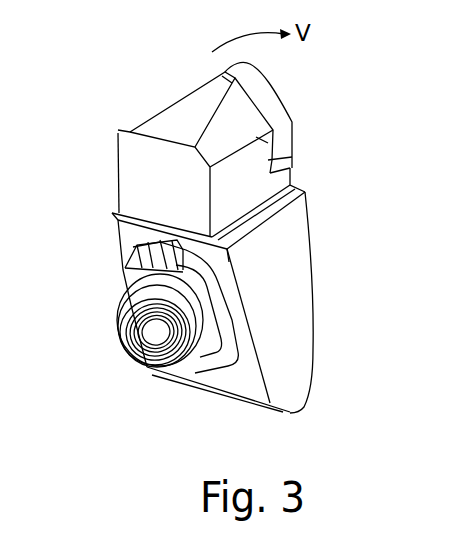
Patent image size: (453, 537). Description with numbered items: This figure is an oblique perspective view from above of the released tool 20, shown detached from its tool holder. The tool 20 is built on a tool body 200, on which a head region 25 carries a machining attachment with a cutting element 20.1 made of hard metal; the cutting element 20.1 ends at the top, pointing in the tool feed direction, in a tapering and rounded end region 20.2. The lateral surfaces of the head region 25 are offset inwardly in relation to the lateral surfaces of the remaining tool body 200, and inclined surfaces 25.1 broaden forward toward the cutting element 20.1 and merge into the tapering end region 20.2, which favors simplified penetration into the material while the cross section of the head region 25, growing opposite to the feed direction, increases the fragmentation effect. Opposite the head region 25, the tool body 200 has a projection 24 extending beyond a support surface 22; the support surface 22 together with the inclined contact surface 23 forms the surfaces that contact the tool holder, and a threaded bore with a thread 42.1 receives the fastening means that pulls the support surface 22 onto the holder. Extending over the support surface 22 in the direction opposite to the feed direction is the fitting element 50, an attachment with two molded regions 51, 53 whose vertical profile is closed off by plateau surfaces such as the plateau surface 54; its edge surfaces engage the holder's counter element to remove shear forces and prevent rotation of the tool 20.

The tool 20 is at (332, 245).
The cutting element 20.1 is at (270, 108).
The end region 20.2 is at (260, 83).
The support surface 22 is at (132, 240).
The contact surface 23 is at (133, 167).
The projection 24 is at (295, 402).
The head region 25 is at (182, 108).
The inclined surfaces 25.1 is at (123, 134).
The fitting element 50 is at (112, 345).
The first molded region 51 is at (222, 370).
The second molded region 53 is at (147, 296).
The plateau surface 54 is at (183, 367).
The thread 42.1 is at (150, 368).
The tool body 200 is at (295, 303).